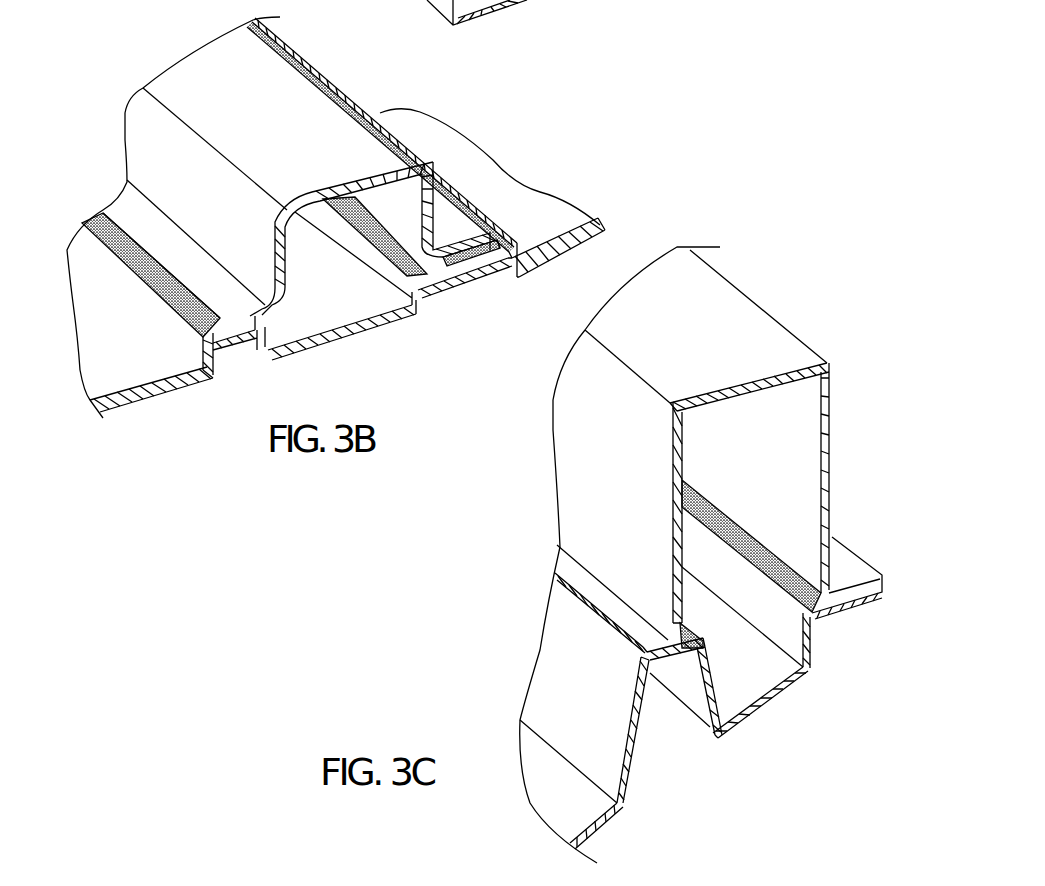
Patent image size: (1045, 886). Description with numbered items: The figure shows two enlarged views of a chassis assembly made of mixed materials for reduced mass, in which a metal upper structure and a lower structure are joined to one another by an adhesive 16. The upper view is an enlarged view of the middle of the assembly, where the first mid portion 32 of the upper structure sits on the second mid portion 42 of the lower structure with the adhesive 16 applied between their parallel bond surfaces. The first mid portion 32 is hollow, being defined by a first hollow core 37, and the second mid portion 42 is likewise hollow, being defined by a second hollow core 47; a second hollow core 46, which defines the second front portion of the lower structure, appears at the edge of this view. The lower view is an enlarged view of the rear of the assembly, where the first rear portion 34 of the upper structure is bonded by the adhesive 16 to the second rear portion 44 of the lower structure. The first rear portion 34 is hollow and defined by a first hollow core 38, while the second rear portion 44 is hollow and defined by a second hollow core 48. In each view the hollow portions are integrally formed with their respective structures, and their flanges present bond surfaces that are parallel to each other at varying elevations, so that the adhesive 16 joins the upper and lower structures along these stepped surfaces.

In FIG. 3B, the adhesive 16 is at (167, 297).
In FIG. 3C, the adhesive 16 is at (780, 577).
In FIG. 3B, the first mid portion 32 is at (142, 148).
In FIG. 3C, the first rear portion 34 is at (573, 462).
In FIG. 3B, the first hollow core 37 is at (385, 197).
In FIG. 3C, the first hollow core 38 is at (765, 435).
In FIG. 3B, the second mid portion 42 is at (255, 347).
In FIG. 3C, the second rear portion 44 is at (690, 690).
In FIG. 3B, the second hollow core 46 is at (543, 0).
In FIG. 3B, the second hollow core 47 is at (333, 297).
In FIG. 3C, the second hollow core 48 is at (750, 667).